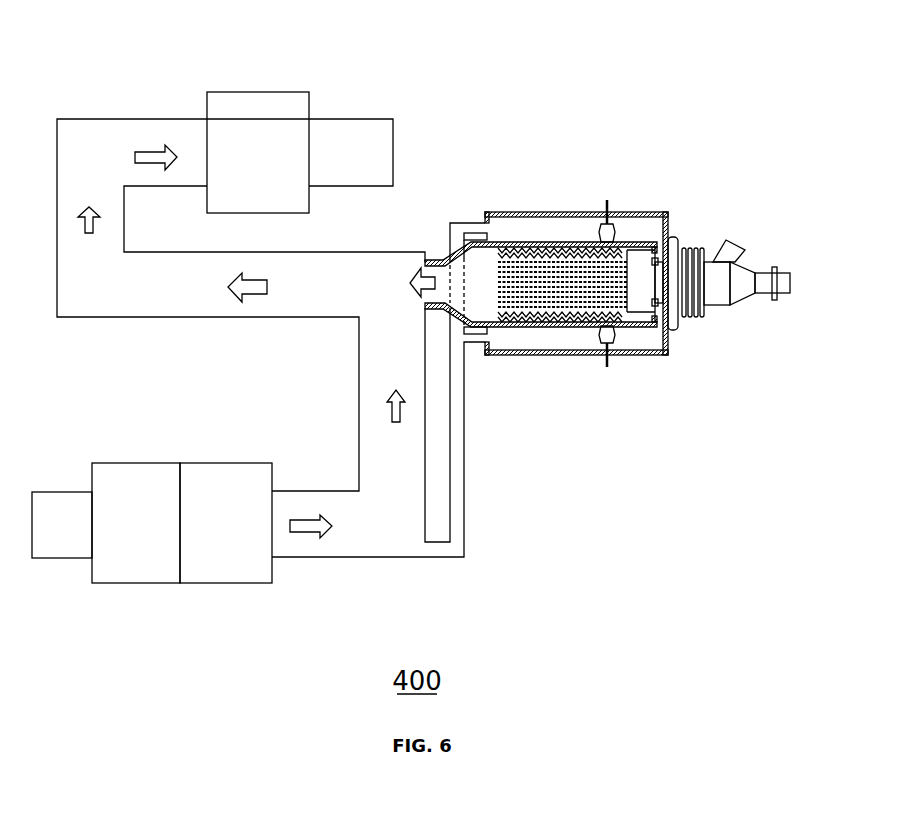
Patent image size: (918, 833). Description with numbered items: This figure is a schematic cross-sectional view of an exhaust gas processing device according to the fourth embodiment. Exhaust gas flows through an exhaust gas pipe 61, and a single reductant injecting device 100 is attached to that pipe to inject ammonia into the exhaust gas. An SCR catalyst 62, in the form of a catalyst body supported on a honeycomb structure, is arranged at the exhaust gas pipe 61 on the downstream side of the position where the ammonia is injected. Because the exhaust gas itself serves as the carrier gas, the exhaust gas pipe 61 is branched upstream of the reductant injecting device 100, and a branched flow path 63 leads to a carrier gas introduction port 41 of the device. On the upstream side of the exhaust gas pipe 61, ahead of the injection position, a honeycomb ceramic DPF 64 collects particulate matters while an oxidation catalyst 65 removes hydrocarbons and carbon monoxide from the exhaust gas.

The SCR catalyst 62 is at (260, 130).
The oxidation catalyst 65 is at (142, 558).
The DPF 64 is at (232, 558).
The exhaust gas pipe 61 is at (388, 532).
The branched flow path 63 is at (455, 550).
The carrier gas introduction port 41 is at (488, 227).
The reductant injecting device 100 is at (577, 366).